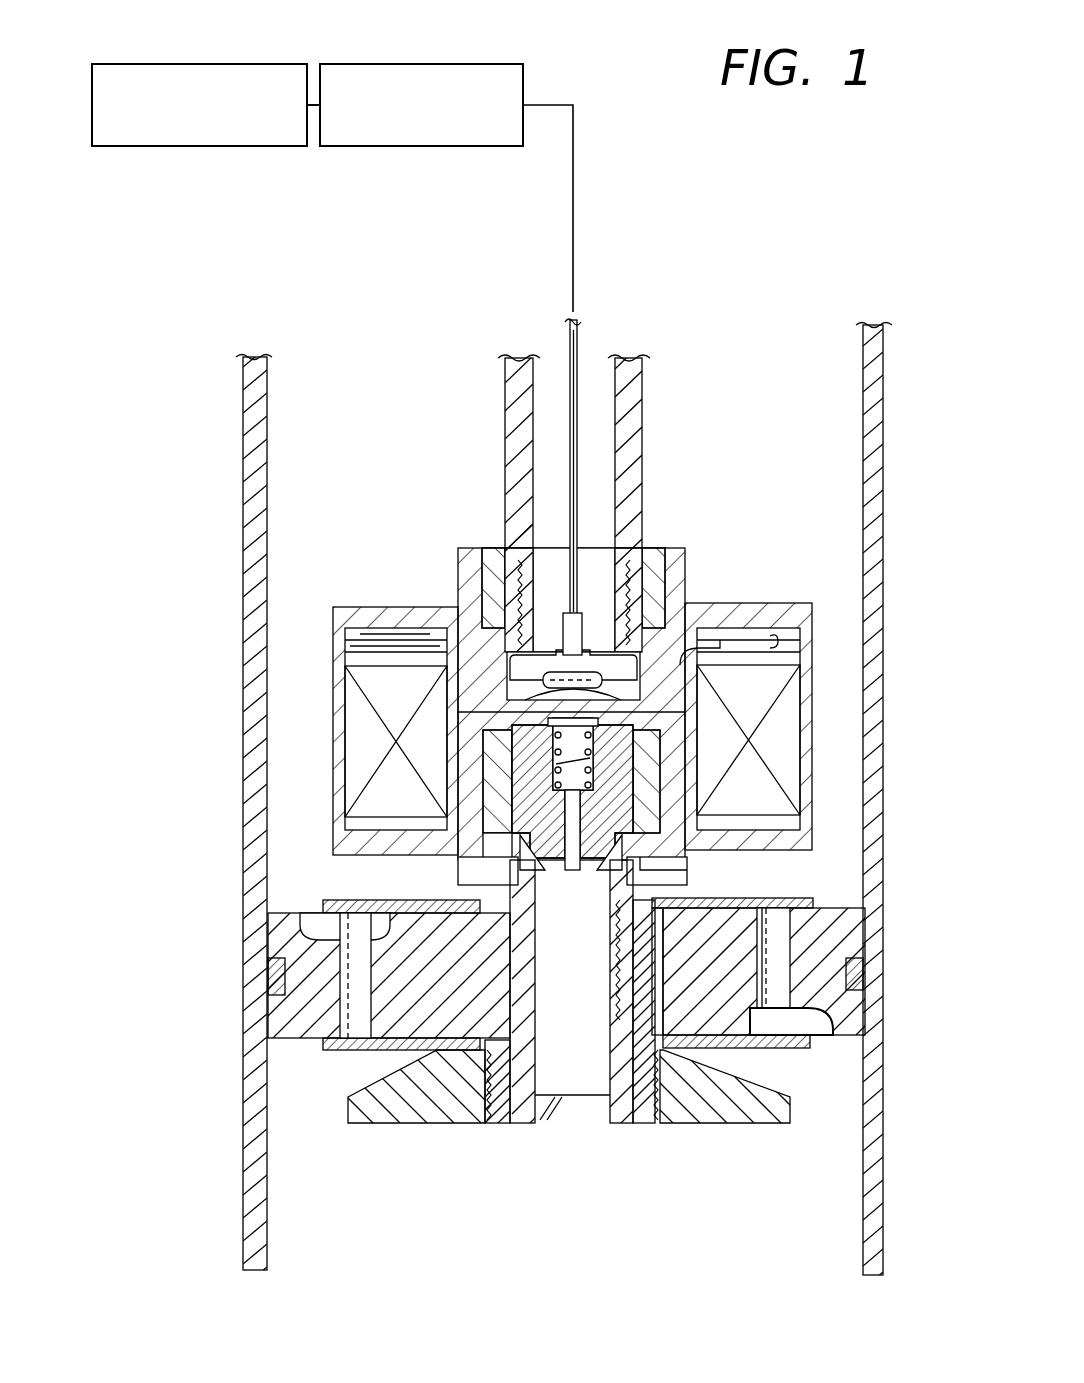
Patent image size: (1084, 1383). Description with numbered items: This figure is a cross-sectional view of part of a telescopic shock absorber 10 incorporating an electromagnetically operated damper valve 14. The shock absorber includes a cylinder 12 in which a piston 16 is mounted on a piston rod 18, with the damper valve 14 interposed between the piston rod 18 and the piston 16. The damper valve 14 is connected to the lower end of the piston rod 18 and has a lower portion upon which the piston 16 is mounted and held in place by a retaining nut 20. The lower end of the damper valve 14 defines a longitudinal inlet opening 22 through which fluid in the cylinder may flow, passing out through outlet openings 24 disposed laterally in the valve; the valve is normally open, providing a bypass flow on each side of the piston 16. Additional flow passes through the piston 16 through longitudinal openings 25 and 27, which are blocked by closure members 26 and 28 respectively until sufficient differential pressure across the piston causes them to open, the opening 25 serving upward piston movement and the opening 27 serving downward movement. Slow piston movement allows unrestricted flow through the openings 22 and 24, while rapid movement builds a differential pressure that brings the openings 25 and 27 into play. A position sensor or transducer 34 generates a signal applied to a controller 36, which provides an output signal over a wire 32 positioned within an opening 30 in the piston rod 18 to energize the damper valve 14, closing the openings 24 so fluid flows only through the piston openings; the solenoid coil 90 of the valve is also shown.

The mounting wall 10 is at (183, 542).
The cylinder 12 is at (885, 420).
The damper valve 14 is at (414, 586).
The piston 16 is at (318, 983).
The piston rod 18 is at (643, 445).
The retaining nut 20 is at (417, 1125).
The longitudinal inlet opening 22 is at (552, 1072).
The outlet openings 24 is at (470, 875).
The longitudinal opening 25 is at (360, 1008).
The closure member 26 is at (790, 1050).
The longitudinal opening 27 is at (760, 945).
The closure member 28 is at (813, 898).
The opening 30 is at (615, 390).
The wire 32 is at (568, 335).
The transducer 34 is at (232, 64).
The controller 36 is at (437, 64).
The solenoid coil 90 is at (805, 752).